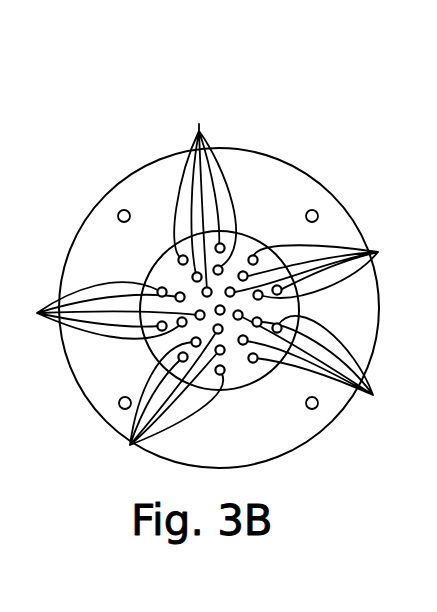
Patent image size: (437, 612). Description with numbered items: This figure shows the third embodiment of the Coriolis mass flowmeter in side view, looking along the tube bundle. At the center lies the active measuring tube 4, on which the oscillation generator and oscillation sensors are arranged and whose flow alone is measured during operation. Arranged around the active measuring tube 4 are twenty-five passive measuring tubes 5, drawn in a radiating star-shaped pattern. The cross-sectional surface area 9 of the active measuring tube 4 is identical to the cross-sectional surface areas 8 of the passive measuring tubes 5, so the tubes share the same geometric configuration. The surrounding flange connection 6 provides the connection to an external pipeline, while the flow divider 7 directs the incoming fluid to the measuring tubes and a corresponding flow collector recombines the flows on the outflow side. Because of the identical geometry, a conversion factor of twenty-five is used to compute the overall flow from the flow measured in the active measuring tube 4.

The active measuring tube 4 is at (292, 316).
The passive measuring tube 5 is at (123, 455).
The flange connection 6 is at (237, 167).
The flow divider 7 is at (245, 373).
The cross-sectional surface area of the passive measuring tube 8 is at (254, 256).
The cross-sectional surface area of the active measuring tube 9 is at (217, 308).